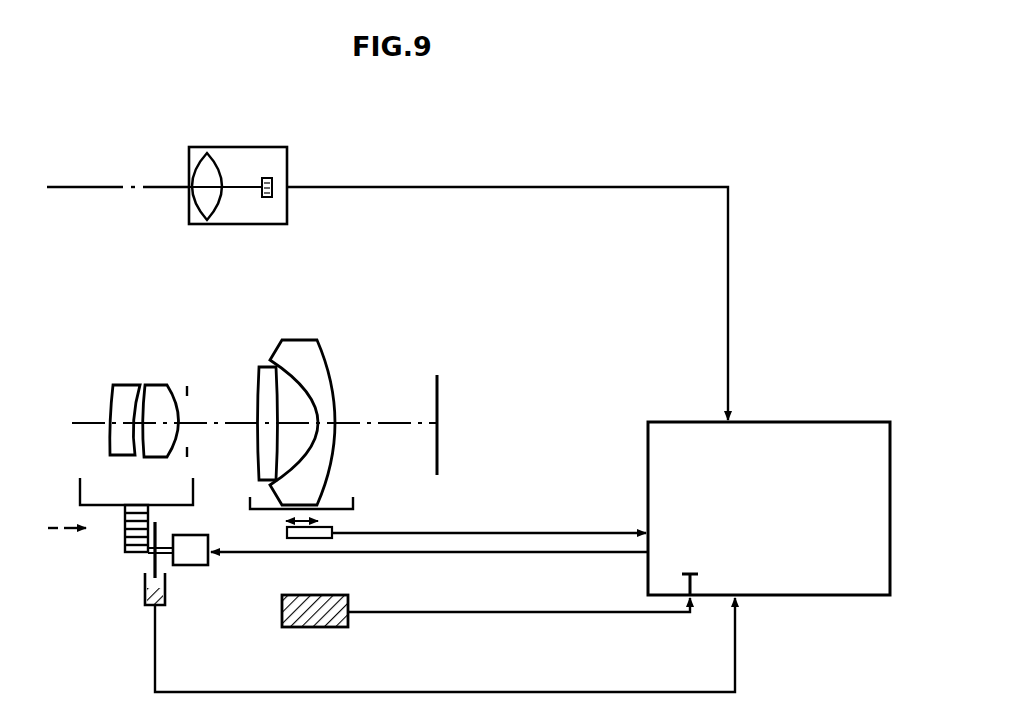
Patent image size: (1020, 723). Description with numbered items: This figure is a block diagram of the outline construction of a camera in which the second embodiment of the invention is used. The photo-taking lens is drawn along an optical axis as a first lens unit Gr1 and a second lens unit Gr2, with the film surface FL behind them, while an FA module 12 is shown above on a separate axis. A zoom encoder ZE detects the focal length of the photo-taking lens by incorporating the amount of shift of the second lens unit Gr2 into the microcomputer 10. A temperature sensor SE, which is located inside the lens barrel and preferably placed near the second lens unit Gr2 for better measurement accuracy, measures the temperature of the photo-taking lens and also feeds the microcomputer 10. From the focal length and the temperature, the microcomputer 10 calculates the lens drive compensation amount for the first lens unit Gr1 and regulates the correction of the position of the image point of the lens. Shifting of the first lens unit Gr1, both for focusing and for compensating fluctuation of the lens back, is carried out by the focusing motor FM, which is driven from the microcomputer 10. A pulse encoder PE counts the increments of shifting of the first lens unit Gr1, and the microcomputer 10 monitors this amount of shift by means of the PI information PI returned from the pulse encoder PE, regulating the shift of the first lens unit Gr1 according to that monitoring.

The FA module 12 is at (230, 147).
The microcomputer 10 is at (795, 422).
The first lens unit Gr1 is at (203, 365).
The second lens unit Gr2 is at (360, 336).
The film surface FL is at (437, 392).
The zoom encoder ZE is at (287, 533).
The focusing motor FM is at (195, 565).
The pulse encoder PE is at (143, 590).
The temperature sensor SE is at (315, 627).
The PI information PI is at (445, 628).